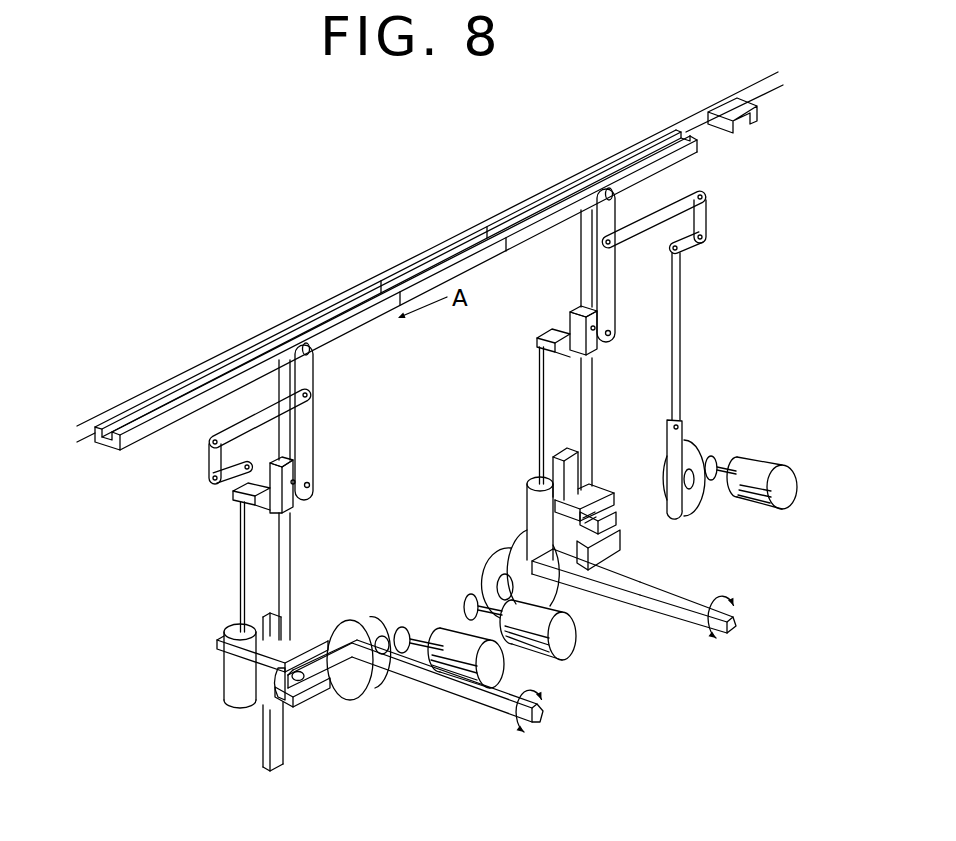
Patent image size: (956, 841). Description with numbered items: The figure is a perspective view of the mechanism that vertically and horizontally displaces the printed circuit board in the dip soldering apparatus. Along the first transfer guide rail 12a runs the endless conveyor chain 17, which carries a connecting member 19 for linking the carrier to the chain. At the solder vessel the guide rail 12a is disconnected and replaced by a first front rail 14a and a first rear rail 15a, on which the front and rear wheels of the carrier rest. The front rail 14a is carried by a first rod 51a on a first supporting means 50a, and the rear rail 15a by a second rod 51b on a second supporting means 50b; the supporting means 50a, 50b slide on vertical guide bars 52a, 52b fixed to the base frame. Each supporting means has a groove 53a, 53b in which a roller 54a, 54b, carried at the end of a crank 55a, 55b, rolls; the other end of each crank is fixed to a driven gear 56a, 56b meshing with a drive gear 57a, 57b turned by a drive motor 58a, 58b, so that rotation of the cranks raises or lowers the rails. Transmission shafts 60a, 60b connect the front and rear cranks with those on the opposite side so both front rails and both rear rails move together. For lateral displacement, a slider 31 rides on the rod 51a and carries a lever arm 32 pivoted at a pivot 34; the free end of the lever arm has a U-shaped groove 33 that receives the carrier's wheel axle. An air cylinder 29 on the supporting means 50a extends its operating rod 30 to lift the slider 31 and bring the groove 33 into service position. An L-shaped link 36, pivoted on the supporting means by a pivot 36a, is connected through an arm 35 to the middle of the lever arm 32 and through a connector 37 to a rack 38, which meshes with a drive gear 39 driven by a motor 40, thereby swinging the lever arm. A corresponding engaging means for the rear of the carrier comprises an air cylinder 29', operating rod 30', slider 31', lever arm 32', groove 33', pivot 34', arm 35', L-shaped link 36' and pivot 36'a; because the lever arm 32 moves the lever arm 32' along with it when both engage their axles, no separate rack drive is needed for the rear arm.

The first transfer guide rail 12a is at (122, 423).
The first front rail 14a is at (527, 208).
The first rear rail 15a is at (203, 367).
The endless conveyor chain 17 is at (353, 288).
The connecting member 19 is at (757, 122).
The air cylinder 29 is at (520, 495).
The air cylinder 29' is at (214, 666).
The operating rod 30 is at (519, 415).
The operating rod 30' is at (213, 567).
The slider 31 is at (559, 319).
The slider 31' is at (299, 489).
The lever arm 32 is at (629, 265).
The lever arm 32' is at (332, 422).
The U-shaped groove 33 is at (641, 195).
The U-shaped groove 33' is at (338, 362).
The pivot 34 is at (634, 344).
The pivot 34' is at (338, 470).
The arm 35 is at (680, 209).
The arm 35' is at (234, 423).
The L-shaped link 36 is at (706, 258).
The L-shaped link 36' is at (188, 469).
The pivot 36a is at (706, 236).
The pivot 36'a is at (219, 500).
The connector 37 is at (681, 318).
The rack 38 is at (683, 430).
The drive gear 39 is at (699, 450).
The motor 40 is at (764, 470).
The first supporting means 50a is at (620, 551).
The second supporting means 50b is at (263, 683).
The first rod 51a is at (593, 398).
The second rod 51b is at (291, 556).
The vertical guide bar 52a is at (571, 466).
The vertical guide bar 52b is at (278, 764).
The groove 53a is at (613, 521).
The groove 53b is at (271, 690).
The roller 54a is at (603, 488).
The roller 54b is at (297, 668).
The crank 55a is at (618, 534).
The crank 55b is at (310, 684).
The driven gear 56a is at (547, 591).
The driven gear 56b is at (350, 627).
The drive gear 57a is at (497, 563).
The drive gear 57b is at (377, 620).
The drive motor 58a is at (564, 648).
The drive motor 58b is at (497, 670).
The transmission shaft 60a is at (686, 612).
The transmission shaft 60b is at (479, 704).